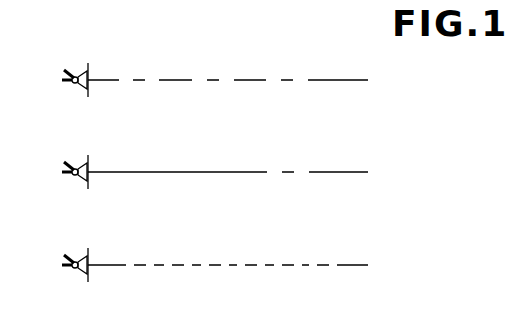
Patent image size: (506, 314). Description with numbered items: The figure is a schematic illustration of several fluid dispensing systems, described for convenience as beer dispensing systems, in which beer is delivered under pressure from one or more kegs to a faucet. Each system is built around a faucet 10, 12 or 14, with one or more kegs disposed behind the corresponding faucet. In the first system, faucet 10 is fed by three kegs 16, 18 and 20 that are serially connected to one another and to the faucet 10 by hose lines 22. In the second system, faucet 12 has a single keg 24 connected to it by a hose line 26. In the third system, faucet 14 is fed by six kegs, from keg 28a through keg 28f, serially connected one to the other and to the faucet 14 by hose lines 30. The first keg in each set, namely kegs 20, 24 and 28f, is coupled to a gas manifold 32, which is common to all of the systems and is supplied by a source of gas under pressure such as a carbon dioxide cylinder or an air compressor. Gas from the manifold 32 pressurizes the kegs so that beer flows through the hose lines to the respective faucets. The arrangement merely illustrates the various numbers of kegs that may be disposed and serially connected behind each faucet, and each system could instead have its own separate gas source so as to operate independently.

The faucet 10 is at (73, 66).
The faucet 12 is at (74, 160).
The faucet 14 is at (279, 151).
The keg 16 is at (156, 61).
The keg 18 is at (232, 60).
The keg 20 is at (304, 61).
The hose lines 22 is at (176, 85).
The keg 24 is at (269, 158).
The hose line 26 is at (187, 171).
The keg 28a is at (137, 252).
The keg 28f is at (320, 252).
The hose lines 30 is at (195, 252).
The gas manifold 32 is at (381, 130).